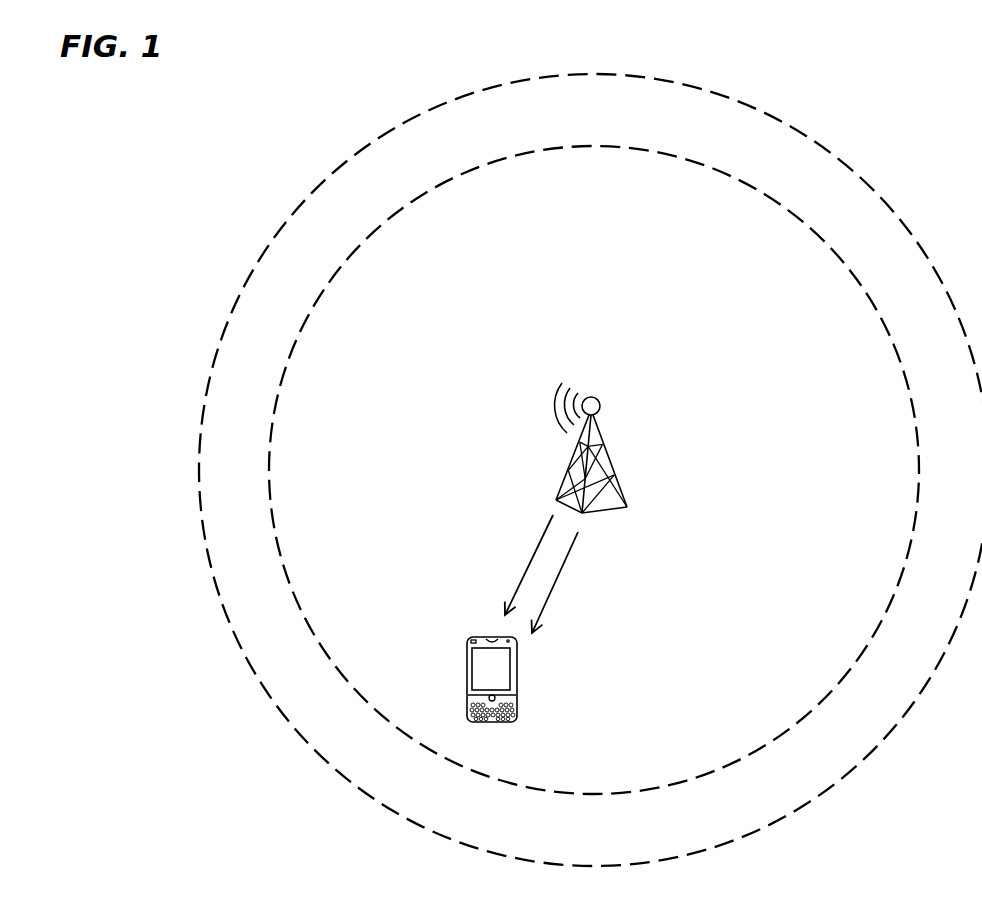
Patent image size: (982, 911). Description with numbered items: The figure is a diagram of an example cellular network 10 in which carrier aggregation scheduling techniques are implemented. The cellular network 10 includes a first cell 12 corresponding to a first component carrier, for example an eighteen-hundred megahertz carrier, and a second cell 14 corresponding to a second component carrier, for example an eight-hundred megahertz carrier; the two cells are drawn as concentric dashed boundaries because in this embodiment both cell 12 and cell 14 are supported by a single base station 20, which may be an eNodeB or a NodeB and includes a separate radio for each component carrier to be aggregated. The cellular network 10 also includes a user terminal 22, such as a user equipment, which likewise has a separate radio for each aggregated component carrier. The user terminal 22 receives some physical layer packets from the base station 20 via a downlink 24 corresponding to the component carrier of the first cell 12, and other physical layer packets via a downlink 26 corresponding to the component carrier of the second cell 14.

The cellular network 10 is at (898, 58).
The first cell 12 is at (830, 692).
The second cell 14 is at (852, 768).
The base station 20 is at (613, 468).
The user terminal 22 is at (517, 699).
The downlink 24 is at (522, 550).
The downlink 26 is at (568, 590).